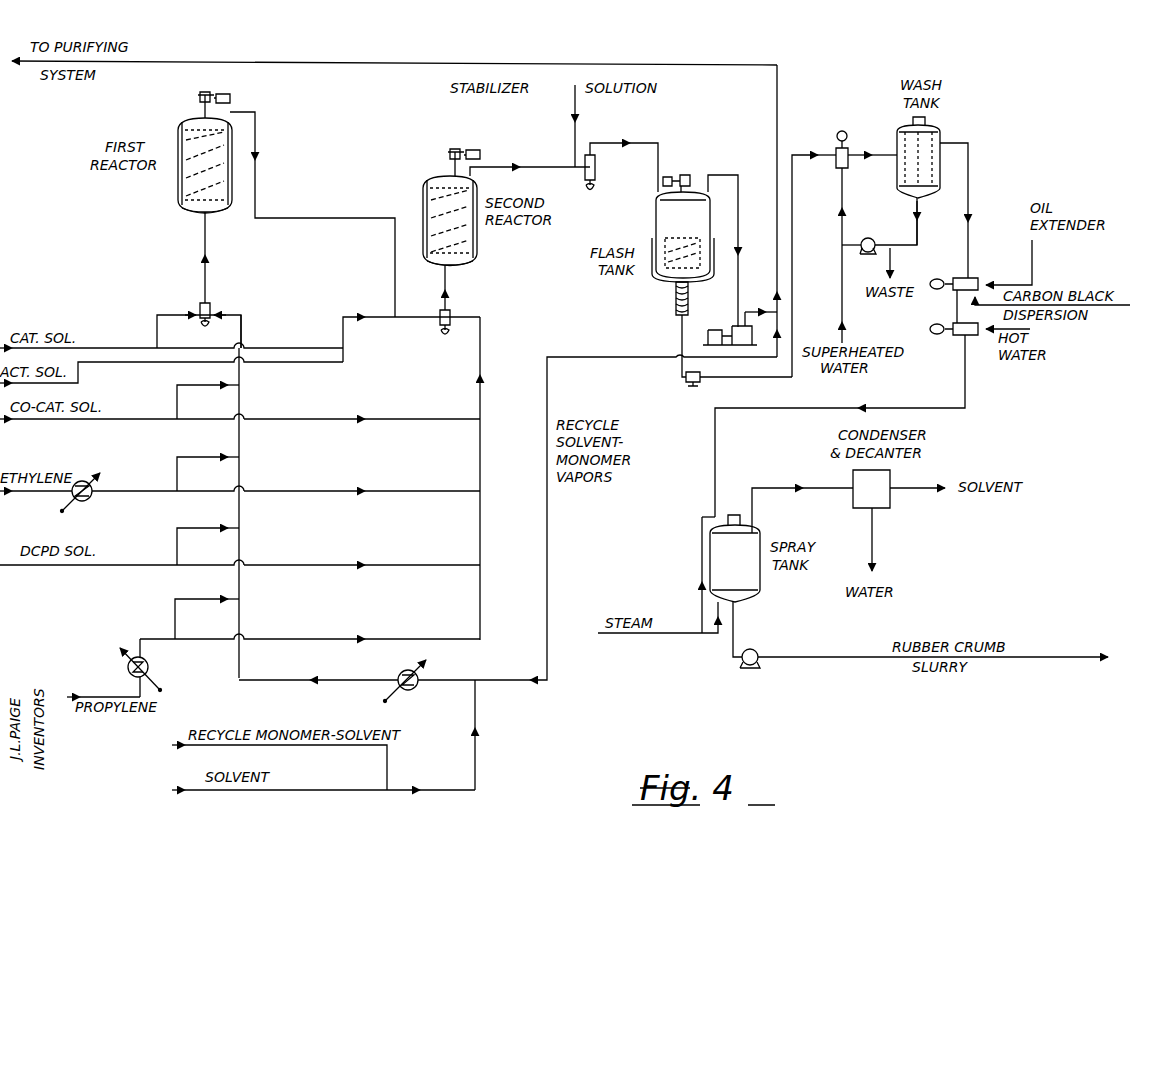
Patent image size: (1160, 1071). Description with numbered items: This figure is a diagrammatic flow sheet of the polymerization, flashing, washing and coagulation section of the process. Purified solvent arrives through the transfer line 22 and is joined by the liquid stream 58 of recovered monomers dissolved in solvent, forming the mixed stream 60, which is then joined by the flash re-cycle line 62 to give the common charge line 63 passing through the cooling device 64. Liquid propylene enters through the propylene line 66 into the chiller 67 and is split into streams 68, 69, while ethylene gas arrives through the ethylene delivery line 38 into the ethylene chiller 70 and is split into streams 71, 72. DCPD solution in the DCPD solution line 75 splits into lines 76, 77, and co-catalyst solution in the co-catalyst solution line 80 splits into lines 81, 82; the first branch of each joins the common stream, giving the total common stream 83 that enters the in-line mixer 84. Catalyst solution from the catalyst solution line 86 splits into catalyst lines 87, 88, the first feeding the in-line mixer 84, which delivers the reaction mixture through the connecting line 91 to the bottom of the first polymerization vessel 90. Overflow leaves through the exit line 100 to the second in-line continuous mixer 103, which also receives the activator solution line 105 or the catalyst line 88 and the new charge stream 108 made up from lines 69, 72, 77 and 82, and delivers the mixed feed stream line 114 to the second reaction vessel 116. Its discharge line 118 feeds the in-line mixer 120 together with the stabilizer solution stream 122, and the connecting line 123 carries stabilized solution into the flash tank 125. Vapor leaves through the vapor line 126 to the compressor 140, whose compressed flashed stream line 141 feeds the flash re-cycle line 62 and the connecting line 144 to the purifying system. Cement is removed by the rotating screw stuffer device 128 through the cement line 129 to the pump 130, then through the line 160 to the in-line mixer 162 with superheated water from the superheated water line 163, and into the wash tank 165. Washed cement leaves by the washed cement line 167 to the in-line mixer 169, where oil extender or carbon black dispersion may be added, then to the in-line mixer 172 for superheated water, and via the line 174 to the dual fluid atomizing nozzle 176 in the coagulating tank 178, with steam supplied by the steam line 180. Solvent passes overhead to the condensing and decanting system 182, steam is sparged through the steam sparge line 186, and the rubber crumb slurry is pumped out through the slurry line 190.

The transfer line 22 is at (320, 792).
The ethylene delivery line 38 is at (42, 494).
The liquid stream of recovered monomers dissolved in solvent 58 is at (389, 766).
The mixed stream 60 is at (446, 792).
The flash re-cycle line 62 is at (549, 528).
The common charge line 63 is at (430, 683).
The cooling device 64 is at (398, 674).
The propylene line 66 is at (108, 697).
The chiller 67 is at (150, 665).
The propylene stream 68 is at (174, 613).
The propylene line 69 is at (334, 642).
The ethylene chiller 70 is at (91, 499).
The ethylene stream 71 is at (176, 467).
The ethylene line 72 is at (456, 492).
The DCPD solution line 75 is at (130, 566).
The DCPD solution line 76 is at (176, 538).
The DCPD solution line 77 is at (454, 566).
The co-catalyst solution line 80 is at (56, 421).
The co-catalyst solution line 81 is at (176, 396).
The co-catalyst solution line 82 is at (454, 420).
The total common stream 83 is at (243, 328).
The in-line mixer 84 is at (210, 306).
The catalyst solution line 86 is at (130, 350).
The catalyst line 87 is at (176, 314).
The catalyst line 88 is at (324, 350).
The first polymerization vessel 90 is at (178, 128).
The connecting line 91 is at (203, 235).
The exit line 100 is at (256, 128).
The second in-line continuous mixer 103 is at (451, 311).
The activator solution line 105 is at (294, 366).
The new charge stream 108 is at (484, 345).
The mixed feed stream line 114 is at (445, 280).
The second reaction vessel 116 is at (423, 188).
The discharge line 118 is at (498, 167).
The in-line mixer 120 is at (596, 168).
The stabilizer solution stream 122 is at (578, 140).
The connecting line 123 is at (652, 142).
The flash tank 125 is at (656, 206).
The vapor line 126 is at (726, 175).
The rotating screw stuffer device 128 is at (676, 300).
The cement line 129 is at (680, 342).
The pump 130 is at (684, 388).
The compressor 140 is at (730, 325).
The compressed flashed stream line 141 is at (762, 310).
The connecting line 144 is at (782, 90).
The line 160 is at (796, 336).
The in-line mixer 162 is at (848, 138).
The superheated water line 163 is at (838, 228).
The wash tank 165 is at (942, 134).
The washed cement line 167 is at (972, 160).
The in-line mixer 169 is at (968, 280).
The in-line mixer 172 is at (956, 340).
The line 174 is at (800, 410).
The dual fluid atomizing nozzle 176 is at (704, 518).
The coagulating tank 178 is at (744, 528).
The steam line 180 is at (702, 555).
The condensing and decanting system 182 is at (854, 504).
The steam sparge line 186 is at (708, 640).
The slurry line 190 is at (836, 660).